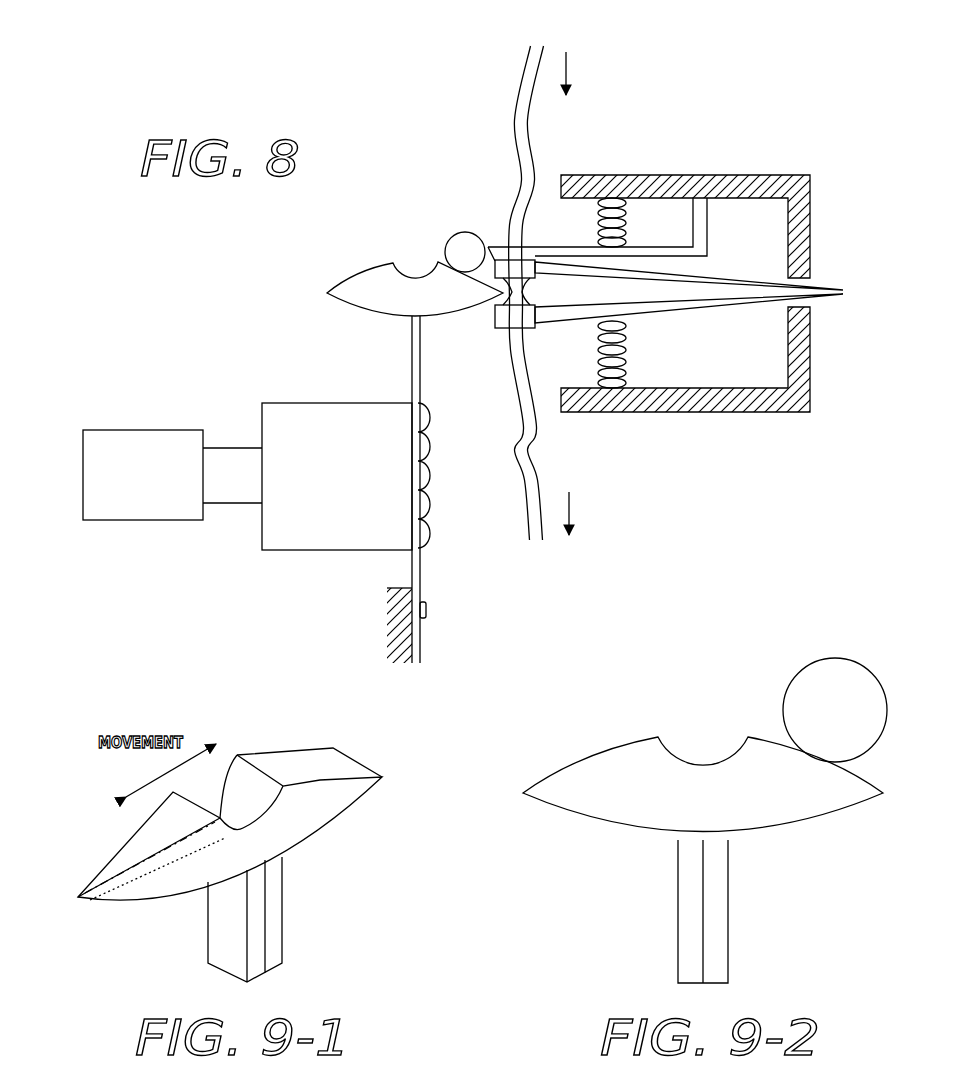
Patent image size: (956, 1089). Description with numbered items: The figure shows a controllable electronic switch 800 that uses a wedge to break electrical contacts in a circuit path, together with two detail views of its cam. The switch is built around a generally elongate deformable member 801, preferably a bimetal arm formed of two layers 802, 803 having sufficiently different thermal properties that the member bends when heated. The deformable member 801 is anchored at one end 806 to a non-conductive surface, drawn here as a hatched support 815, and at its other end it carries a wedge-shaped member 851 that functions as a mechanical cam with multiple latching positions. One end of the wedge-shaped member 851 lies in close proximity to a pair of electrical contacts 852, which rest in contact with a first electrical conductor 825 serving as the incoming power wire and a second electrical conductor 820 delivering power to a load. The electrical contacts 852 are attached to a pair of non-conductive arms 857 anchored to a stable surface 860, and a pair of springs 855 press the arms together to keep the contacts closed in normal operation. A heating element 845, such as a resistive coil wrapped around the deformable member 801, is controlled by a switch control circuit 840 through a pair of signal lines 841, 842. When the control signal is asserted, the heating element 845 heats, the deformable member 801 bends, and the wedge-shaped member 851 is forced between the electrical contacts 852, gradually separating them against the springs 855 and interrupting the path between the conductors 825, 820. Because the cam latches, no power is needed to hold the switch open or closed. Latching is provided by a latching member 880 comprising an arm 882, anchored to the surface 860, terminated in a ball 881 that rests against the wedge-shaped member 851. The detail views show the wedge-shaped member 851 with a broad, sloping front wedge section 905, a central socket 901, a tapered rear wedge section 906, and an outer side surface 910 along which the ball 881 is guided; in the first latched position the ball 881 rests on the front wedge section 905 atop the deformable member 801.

In FIG. 8, the controllable electronic switch 800 is at (698, 78).
In FIG. 8, the deformable member 801 is at (401, 384).
In FIG. 9-1, the deformable member 801 is at (300, 917).
In FIG. 9-2, the deformable member 801 is at (748, 908).
In FIG. 8, the layer 802 is at (421, 582).
In FIG. 8, the layer 803 is at (410, 568).
In FIG. 8, the end 806 is at (426, 609).
In FIG. 8, the support wall 815 is at (413, 643).
In FIG. 8, the second electrical conductor 820 is at (541, 438).
In FIG. 8, the first electrical conductor 825 is at (514, 120).
In FIG. 8, the switch control circuit 840 is at (112, 430).
In FIG. 8, the signal line 841 is at (262, 525).
In FIG. 8, the signal line 842 is at (262, 410).
In FIG. 8, the heating element 845 is at (431, 478).
In FIG. 8, the wedge-shaped member 851 is at (362, 278).
In FIG. 9-1, the wedge-shaped member 851 is at (82, 822).
In FIG. 9-2, the wedge-shaped member 851 is at (803, 853).
In FIG. 8, the electrical contacts 852 is at (506, 318).
In FIG. 8, the springs 855 is at (624, 214).
In FIG. 8, the non-conductive arms 857 is at (753, 384).
In FIG. 8, the stable surface 860 is at (757, 203).
In FIG. 8, the latching member 880 is at (566, 230).
In FIG. 8, the ball 881 is at (451, 236).
In FIG. 9-2, the ball 881 is at (838, 658).
In FIG. 8, the arm 882 is at (643, 280).
In FIG. 9-1, the central socket 901 is at (233, 800).
In FIG. 9-2, the central socket 901 is at (700, 763).
In FIG. 9-1, the front wedge section 905 is at (292, 760).
In FIG. 9-2, the front wedge section 905 is at (767, 735).
In FIG. 9-1, the rear wedge section 906 is at (157, 827).
In FIG. 9-2, the rear wedge section 906 is at (582, 765).
In FIG. 9-1, the outer side surface 910 is at (303, 818).